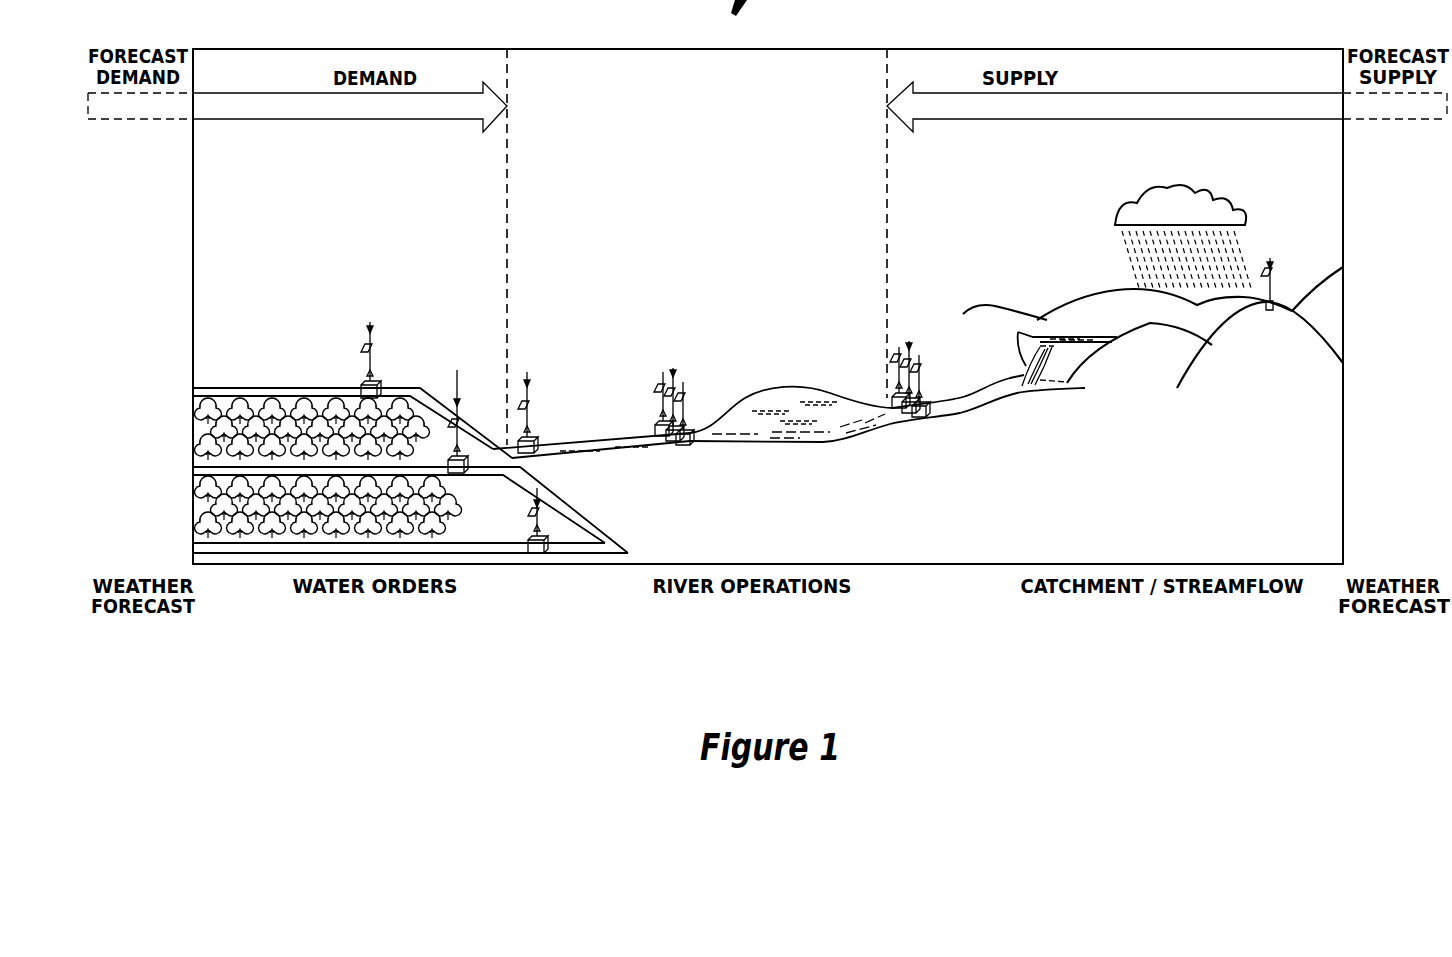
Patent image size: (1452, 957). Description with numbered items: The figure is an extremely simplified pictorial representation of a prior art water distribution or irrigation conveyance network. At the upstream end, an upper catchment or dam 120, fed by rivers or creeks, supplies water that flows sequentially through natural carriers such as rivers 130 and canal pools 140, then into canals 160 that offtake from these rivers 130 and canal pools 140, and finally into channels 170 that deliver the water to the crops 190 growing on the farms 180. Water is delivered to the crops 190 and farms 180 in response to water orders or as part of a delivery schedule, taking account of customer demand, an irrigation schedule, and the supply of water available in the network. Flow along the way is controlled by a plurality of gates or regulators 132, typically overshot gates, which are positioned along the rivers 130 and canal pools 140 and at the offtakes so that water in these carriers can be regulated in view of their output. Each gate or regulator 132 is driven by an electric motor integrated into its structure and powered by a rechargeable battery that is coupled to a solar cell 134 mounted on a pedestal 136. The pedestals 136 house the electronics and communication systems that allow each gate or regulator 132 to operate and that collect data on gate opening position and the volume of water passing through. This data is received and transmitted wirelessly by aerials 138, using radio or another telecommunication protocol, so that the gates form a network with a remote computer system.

The upper catchment or dam 120 is at (1078, 335).
The natural carriers (rivers) 130 is at (950, 415).
The gates or regulators 132 is at (371, 326).
The solar cell 134 is at (363, 349).
The pedestal 136 is at (375, 366).
The aerials 138 is at (375, 333).
The canal pools 140 is at (781, 438).
The canals 160 is at (628, 449).
The channels 170 is at (194, 391).
The farms 180 is at (198, 437).
The crops 190 is at (198, 413).